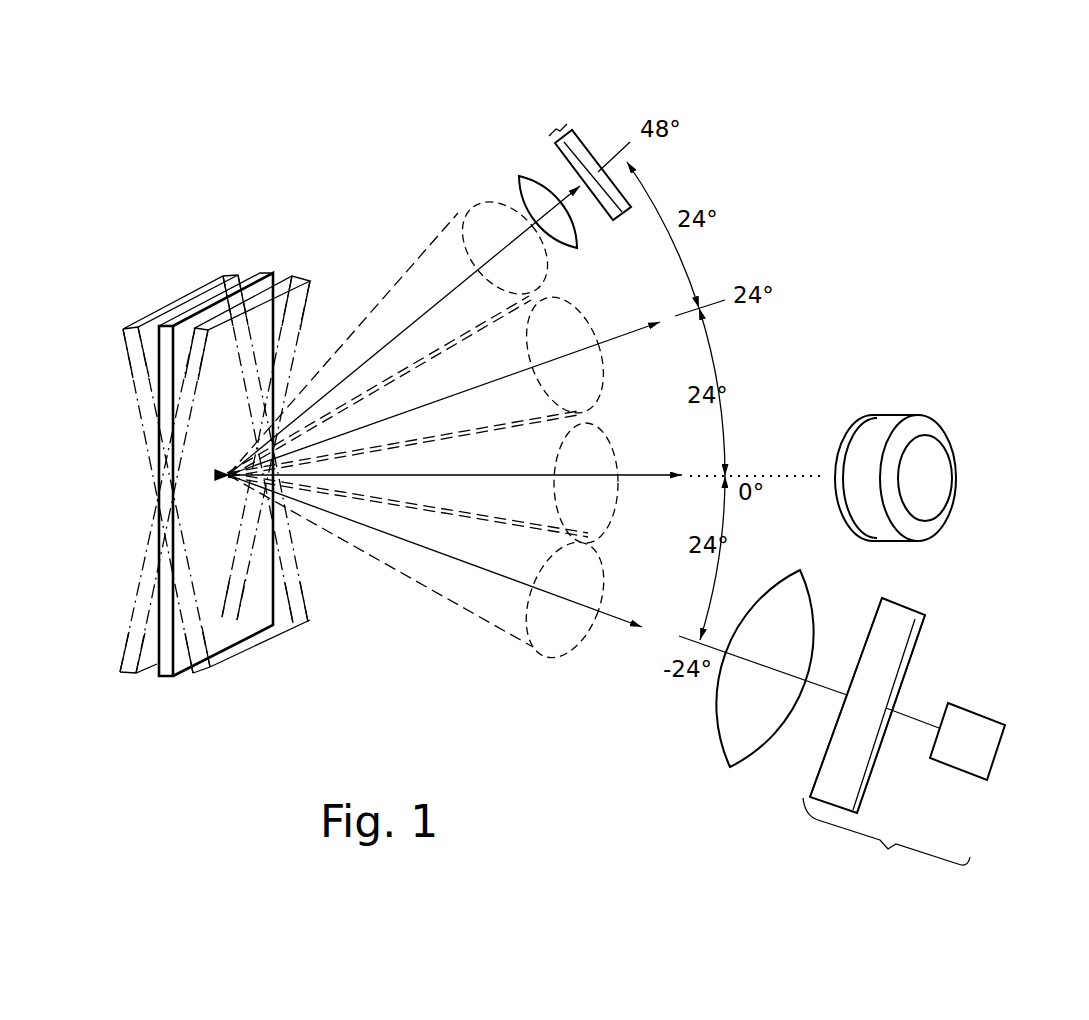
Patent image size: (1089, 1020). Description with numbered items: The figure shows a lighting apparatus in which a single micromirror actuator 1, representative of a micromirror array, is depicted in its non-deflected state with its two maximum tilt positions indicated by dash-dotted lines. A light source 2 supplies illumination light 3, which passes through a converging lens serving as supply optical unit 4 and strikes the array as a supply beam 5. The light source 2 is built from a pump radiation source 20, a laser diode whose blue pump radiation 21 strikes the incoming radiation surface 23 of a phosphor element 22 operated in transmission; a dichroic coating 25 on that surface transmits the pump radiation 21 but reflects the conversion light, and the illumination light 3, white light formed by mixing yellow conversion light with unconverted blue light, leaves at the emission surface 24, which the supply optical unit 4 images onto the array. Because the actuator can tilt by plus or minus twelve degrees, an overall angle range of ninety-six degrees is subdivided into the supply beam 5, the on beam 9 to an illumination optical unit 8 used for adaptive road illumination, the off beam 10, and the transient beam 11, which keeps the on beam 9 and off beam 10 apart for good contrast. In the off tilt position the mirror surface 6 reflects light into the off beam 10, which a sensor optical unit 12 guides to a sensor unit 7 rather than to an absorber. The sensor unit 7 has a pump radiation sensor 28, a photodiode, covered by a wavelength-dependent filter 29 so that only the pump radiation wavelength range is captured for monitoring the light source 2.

The micromirror actuator 1 is at (187, 333).
The light source 2 is at (899, 720).
The illumination light 3 is at (827, 693).
The supply optical unit 4 is at (780, 633).
The supply beam 5 is at (487, 592).
The mirror surface 6 is at (225, 583).
The sensor unit 7 is at (558, 135).
The illumination optical unit 8 is at (860, 448).
The on beam 9 is at (467, 492).
The off beam 10 is at (393, 318).
The transient beam 11 is at (493, 380).
The sensor optical unit 12 is at (527, 188).
The pump radiation source 20 is at (970, 743).
The pump radiation 21 is at (900, 720).
The phosphor element 22 is at (885, 647).
The incoming radiation surface 23 is at (922, 658).
The emission surface 24 is at (868, 630).
The dichroic coating 25 is at (868, 767).
The pump radiation sensor 28 is at (585, 157).
The wavelength-dependent filter 29 is at (573, 167).